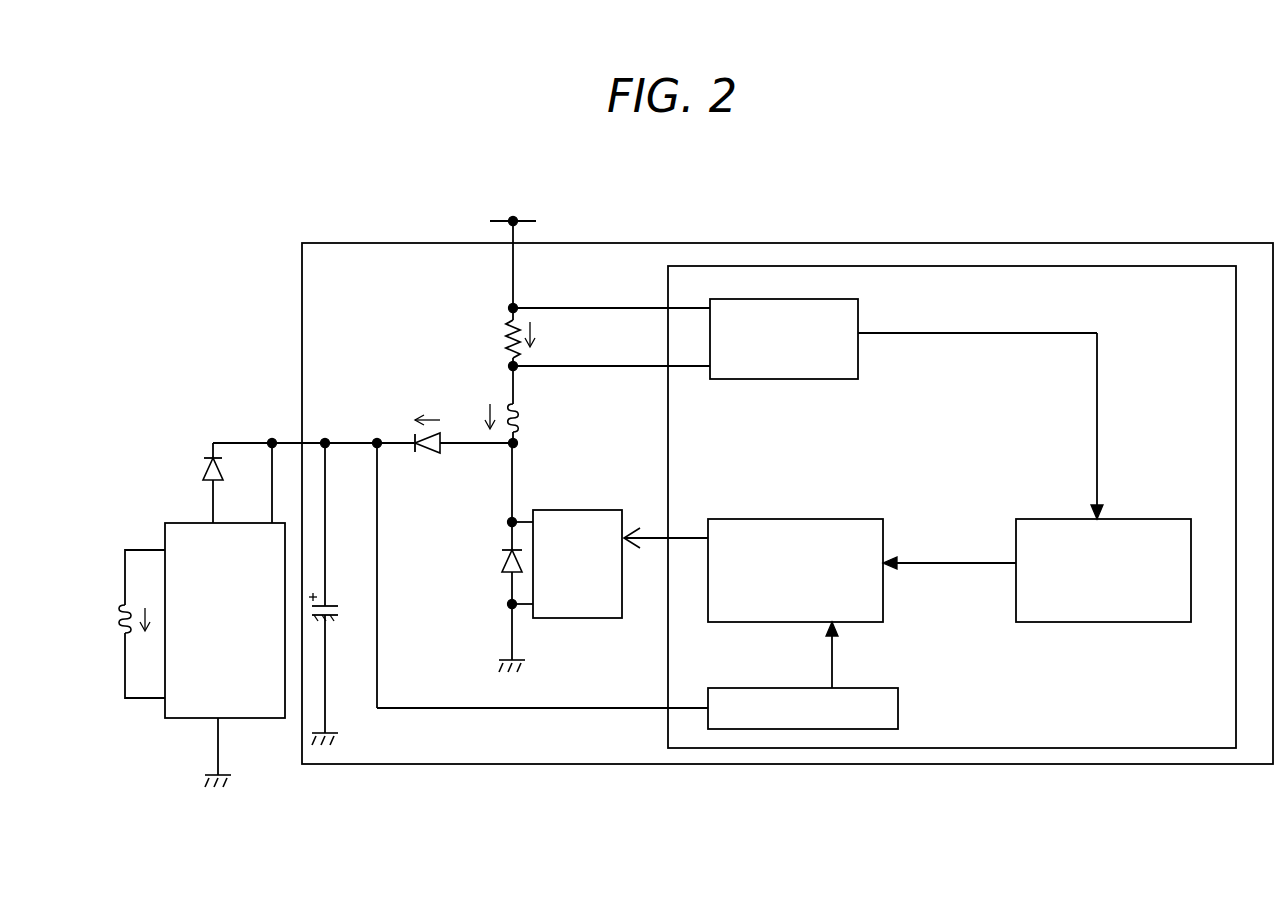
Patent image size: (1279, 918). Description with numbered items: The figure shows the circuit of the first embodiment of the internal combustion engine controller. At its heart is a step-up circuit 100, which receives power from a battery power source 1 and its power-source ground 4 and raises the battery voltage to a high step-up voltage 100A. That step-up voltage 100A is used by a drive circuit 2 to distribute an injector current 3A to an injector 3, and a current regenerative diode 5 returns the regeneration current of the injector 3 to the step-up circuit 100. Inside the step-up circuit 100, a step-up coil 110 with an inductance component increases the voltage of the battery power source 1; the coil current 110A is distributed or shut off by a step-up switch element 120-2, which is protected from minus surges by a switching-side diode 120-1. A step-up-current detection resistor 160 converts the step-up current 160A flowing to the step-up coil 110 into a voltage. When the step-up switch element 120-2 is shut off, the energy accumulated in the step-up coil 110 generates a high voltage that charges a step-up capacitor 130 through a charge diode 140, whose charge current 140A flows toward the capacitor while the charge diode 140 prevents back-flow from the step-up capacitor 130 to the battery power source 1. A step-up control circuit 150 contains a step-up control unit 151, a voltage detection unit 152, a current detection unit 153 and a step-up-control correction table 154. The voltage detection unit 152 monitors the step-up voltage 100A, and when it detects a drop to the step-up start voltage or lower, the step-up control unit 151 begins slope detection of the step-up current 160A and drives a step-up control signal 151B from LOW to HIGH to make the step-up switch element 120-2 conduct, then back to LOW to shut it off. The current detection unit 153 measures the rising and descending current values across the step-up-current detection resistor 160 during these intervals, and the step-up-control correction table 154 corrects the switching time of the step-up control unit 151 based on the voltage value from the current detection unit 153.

The battery power source 1 is at (518, 216).
The drive circuit 2 is at (165, 523).
The injector 3 is at (114, 614).
The injector current 3A is at (140, 634).
The power-source ground 4 is at (214, 772).
The current regenerative diode 5 is at (206, 464).
The step-up circuit 100 is at (302, 322).
The step-up voltage 100A is at (230, 443).
The step-up coil 110 is at (528, 420).
The step-up coil current 110A is at (484, 406).
The switching-side diode 120-1 is at (506, 560).
The step-up switch element 120-2 is at (566, 620).
The step-up capacitor 130 is at (332, 622).
The charge diode 140 is at (410, 420).
The charge current 140A is at (426, 402).
The step-up control circuit 150 is at (744, 266).
The step-up control unit 151 is at (858, 520).
The step-up control signal 151B is at (664, 532).
The voltage detection unit 152 is at (704, 700).
The current detection unit 153 is at (860, 316).
The step-up-control correction table 154 is at (1128, 519).
The step-up-current detection resistor 160 is at (508, 330).
The step-up current 160A is at (534, 340).